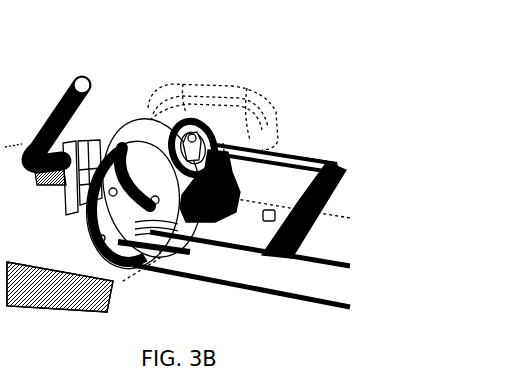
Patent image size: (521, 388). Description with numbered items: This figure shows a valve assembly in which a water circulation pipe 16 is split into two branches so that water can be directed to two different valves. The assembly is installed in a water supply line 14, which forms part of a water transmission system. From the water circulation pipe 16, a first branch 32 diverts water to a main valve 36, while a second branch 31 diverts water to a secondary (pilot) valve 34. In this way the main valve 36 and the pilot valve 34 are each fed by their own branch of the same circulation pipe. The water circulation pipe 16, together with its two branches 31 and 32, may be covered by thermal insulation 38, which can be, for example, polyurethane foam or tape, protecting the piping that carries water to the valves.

The water supply line 14 is at (68, 282).
The water circulation pipe 16 is at (306, 222).
The second branch 31 is at (283, 150).
The first branch 32 is at (207, 98).
The secondary (pilot) valve 34 is at (190, 134).
The main valve 36 is at (150, 140).
The thermal insulation 38 is at (332, 192).